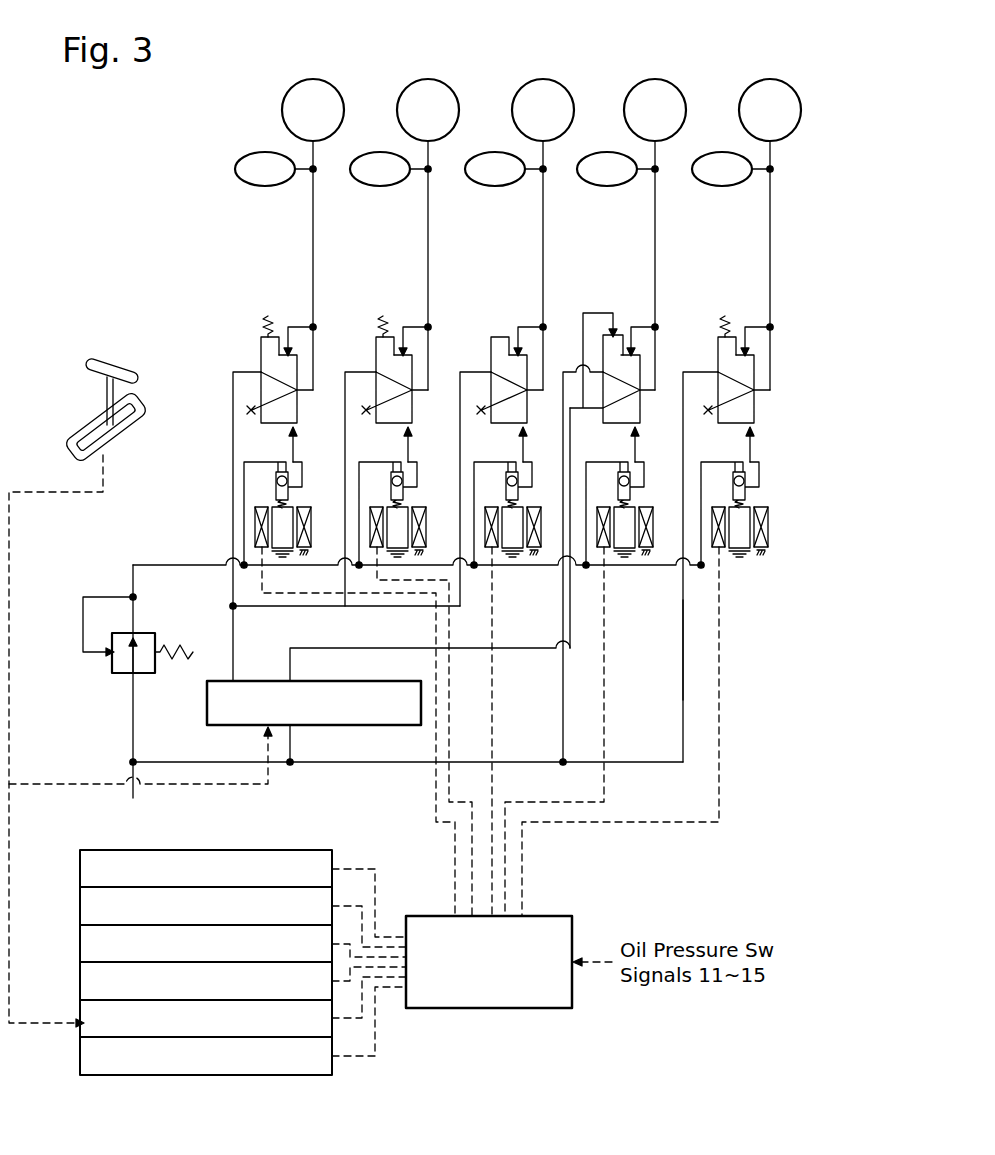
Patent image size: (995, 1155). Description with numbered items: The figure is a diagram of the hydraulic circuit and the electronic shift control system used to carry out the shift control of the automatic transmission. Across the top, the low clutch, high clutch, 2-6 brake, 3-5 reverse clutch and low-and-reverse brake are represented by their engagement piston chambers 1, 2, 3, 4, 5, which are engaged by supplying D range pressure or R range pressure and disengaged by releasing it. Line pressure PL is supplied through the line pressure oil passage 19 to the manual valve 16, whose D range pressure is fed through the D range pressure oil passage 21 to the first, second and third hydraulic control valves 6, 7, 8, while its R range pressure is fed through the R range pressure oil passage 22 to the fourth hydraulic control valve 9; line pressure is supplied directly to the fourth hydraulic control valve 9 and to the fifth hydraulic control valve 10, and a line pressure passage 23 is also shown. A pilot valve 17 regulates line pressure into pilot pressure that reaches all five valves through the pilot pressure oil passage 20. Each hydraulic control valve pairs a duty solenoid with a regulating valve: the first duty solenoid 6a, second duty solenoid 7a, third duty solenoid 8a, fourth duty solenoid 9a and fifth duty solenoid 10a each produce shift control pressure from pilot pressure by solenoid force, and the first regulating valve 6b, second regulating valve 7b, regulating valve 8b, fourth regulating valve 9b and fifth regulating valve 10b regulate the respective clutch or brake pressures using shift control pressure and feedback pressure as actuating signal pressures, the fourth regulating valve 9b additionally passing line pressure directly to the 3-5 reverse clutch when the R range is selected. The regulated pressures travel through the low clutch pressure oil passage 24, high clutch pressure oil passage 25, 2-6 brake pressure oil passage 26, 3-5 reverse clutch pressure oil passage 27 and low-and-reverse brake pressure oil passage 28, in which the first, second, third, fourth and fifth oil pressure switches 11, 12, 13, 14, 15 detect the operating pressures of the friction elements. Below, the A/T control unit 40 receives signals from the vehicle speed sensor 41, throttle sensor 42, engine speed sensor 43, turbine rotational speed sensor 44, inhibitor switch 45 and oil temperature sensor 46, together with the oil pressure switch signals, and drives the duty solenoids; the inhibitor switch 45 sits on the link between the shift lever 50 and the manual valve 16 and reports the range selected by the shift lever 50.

The engagement piston chamber 1 is at (314, 80).
The engagement piston chamber 2 is at (429, 80).
The engagement piston chamber 3 is at (544, 80).
The engagement piston chamber 4 is at (656, 80).
The engagement piston chamber 5 is at (771, 80).
The first hydraulic control valve 6 is at (286, 314).
The first duty solenoid 6a is at (272, 458).
The first regulating valve 6b is at (252, 354).
The second hydraulic control valve 7 is at (396, 357).
The second duty solenoid 7a is at (386, 496).
The second regulating valve 7b is at (353, 344).
The third hydraulic control valve 8 is at (510, 355).
The third duty solenoid 8a is at (500, 496).
The regulating valve 8b is at (470, 344).
The fourth hydraulic control valve 9 is at (586, 310).
The fourth duty solenoid 9a is at (614, 496).
The fourth regulating valve 9b is at (622, 320).
The fifth hydraulic control valve 10 is at (719, 355).
The fifth duty solenoid 10a is at (725, 496).
The fifth regulating valve 10b is at (696, 341).
The first oil pressure switch 11 is at (262, 152).
The second oil pressure switch 12 is at (377, 152).
The third oil pressure switch 13 is at (492, 152).
The fourth oil pressure switch 14 is at (604, 152).
The fifth oil pressure switch 15 is at (720, 152).
The manual valve 16 is at (370, 680).
The pilot valve 17 is at (118, 674).
The line pressure oil passage 19 is at (232, 762).
The pilot pressure oil passage 20 is at (190, 566).
The D range pressure oil passage 21 is at (400, 610).
The R range pressure oil passage 22 is at (520, 646).
The line pressure passage 23 is at (680, 626).
The low clutch pressure oil passage 24 is at (315, 215).
The high clutch pressure oil passage 25 is at (430, 215).
The 2-6 brake pressure oil passage 26 is at (545, 215).
The 3-5 reverse clutch pressure oil passage 27 is at (657, 215).
The low-and-reverse brake pressure oil passage 28 is at (772, 215).
The A/T control unit 40 is at (558, 916).
The vehicle speed sensor 41 is at (80, 870).
The throttle sensor 42 is at (80, 907).
The engine speed sensor 43 is at (80, 945).
The turbine rotational speed sensor 44 is at (80, 982).
The inhibitor switch 45 is at (80, 1010).
The oil temperature sensor 46 is at (80, 1058).
The shift lever 50 is at (110, 360).